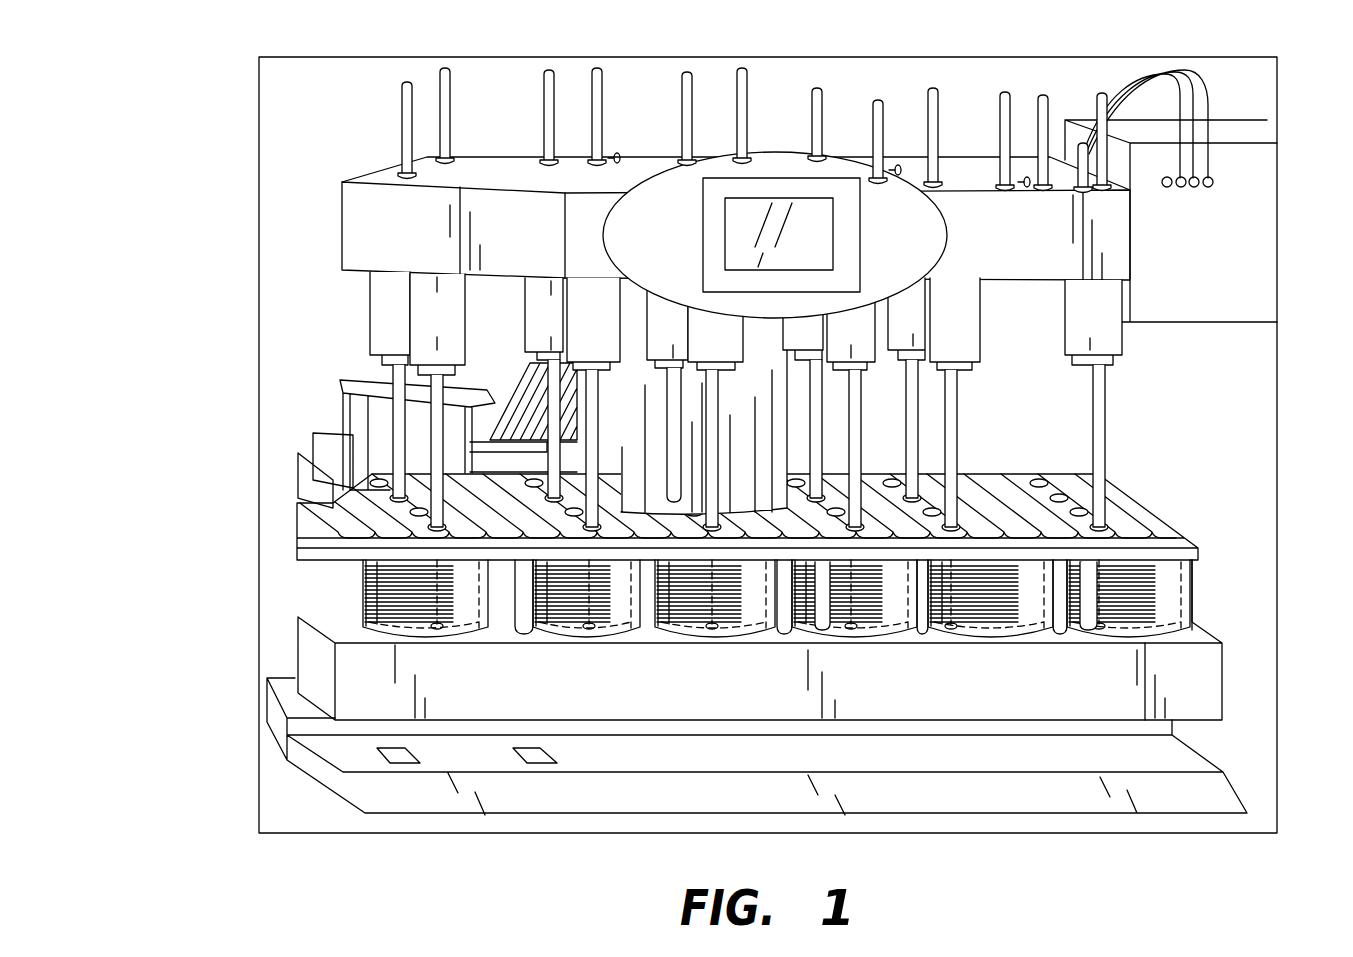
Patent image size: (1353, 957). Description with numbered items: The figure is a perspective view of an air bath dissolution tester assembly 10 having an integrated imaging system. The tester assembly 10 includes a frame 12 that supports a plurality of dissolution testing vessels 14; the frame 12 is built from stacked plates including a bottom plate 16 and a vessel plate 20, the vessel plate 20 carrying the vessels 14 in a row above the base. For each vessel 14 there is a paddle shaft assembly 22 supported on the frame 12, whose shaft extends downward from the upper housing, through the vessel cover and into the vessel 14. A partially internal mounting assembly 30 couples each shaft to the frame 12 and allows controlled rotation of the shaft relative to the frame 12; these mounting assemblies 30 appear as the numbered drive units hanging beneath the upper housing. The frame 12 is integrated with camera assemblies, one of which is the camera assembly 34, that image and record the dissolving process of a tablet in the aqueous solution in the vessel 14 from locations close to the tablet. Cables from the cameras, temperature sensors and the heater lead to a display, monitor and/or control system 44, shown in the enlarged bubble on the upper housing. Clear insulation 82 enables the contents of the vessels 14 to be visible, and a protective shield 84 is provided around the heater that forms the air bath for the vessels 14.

The air bath dissolution tester assembly 10 is at (223, 75).
The frame 12 is at (298, 653).
The dissolution testing vessel 14 is at (365, 585).
The bottom plate 16 is at (1223, 772).
The vessel plate 20 is at (1165, 522).
The paddle shaft assembly 22 is at (962, 405).
The partially internal mounting assembly 30 is at (410, 340).
The camera assembly 34 is at (402, 763).
The display, monitor and/or control system 44 is at (818, 200).
The clear insulation 82 is at (1192, 598).
The protective shield 84 is at (1220, 690).